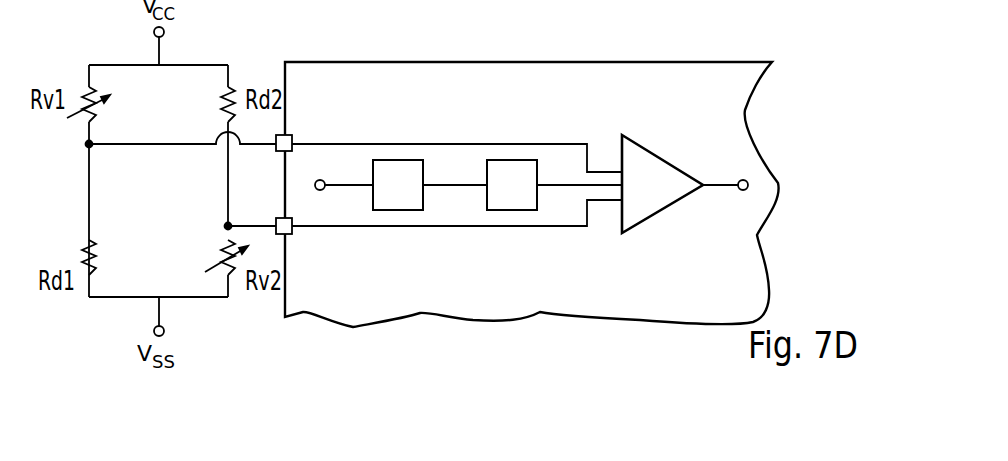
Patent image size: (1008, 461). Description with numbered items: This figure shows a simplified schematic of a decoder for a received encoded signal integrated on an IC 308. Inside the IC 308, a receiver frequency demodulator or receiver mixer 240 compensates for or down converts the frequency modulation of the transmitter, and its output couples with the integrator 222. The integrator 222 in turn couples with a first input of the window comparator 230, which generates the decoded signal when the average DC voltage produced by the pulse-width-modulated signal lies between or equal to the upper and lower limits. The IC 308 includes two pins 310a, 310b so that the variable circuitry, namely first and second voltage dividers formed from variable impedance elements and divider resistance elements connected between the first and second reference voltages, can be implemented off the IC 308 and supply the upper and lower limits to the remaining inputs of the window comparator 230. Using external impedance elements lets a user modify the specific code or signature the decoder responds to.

The IC 308 is at (660, 62).
The first pin 310a is at (292, 137).
The second pin 310b is at (292, 232).
The receiver frequency demodulator 240 is at (415, 197).
The integrator 222 is at (528, 197).
The window comparator 230 is at (665, 197).